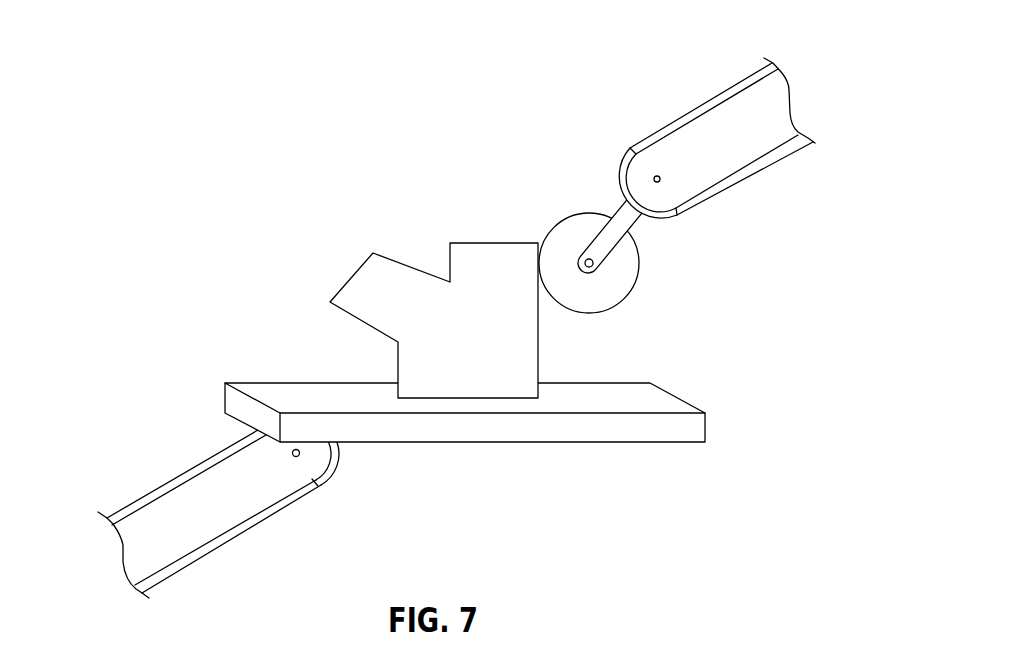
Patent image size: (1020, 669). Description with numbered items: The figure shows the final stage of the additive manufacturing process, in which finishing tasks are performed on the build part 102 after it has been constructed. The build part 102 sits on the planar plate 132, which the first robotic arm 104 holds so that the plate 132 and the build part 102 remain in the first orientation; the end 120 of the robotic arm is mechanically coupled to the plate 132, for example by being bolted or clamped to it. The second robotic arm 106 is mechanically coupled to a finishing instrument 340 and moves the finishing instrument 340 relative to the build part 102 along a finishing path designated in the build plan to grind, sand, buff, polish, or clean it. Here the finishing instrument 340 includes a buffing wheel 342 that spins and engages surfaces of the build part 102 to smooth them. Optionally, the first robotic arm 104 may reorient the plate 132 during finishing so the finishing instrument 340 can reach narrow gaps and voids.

The build part 102 is at (385, 283).
The first robotic arm 104 is at (197, 498).
The second robotic arm 106 is at (727, 155).
The end 120 is at (645, 177).
The plate 132 is at (620, 428).
The finishing instrument 340 is at (622, 211).
The buffing wheel 342 is at (615, 287).